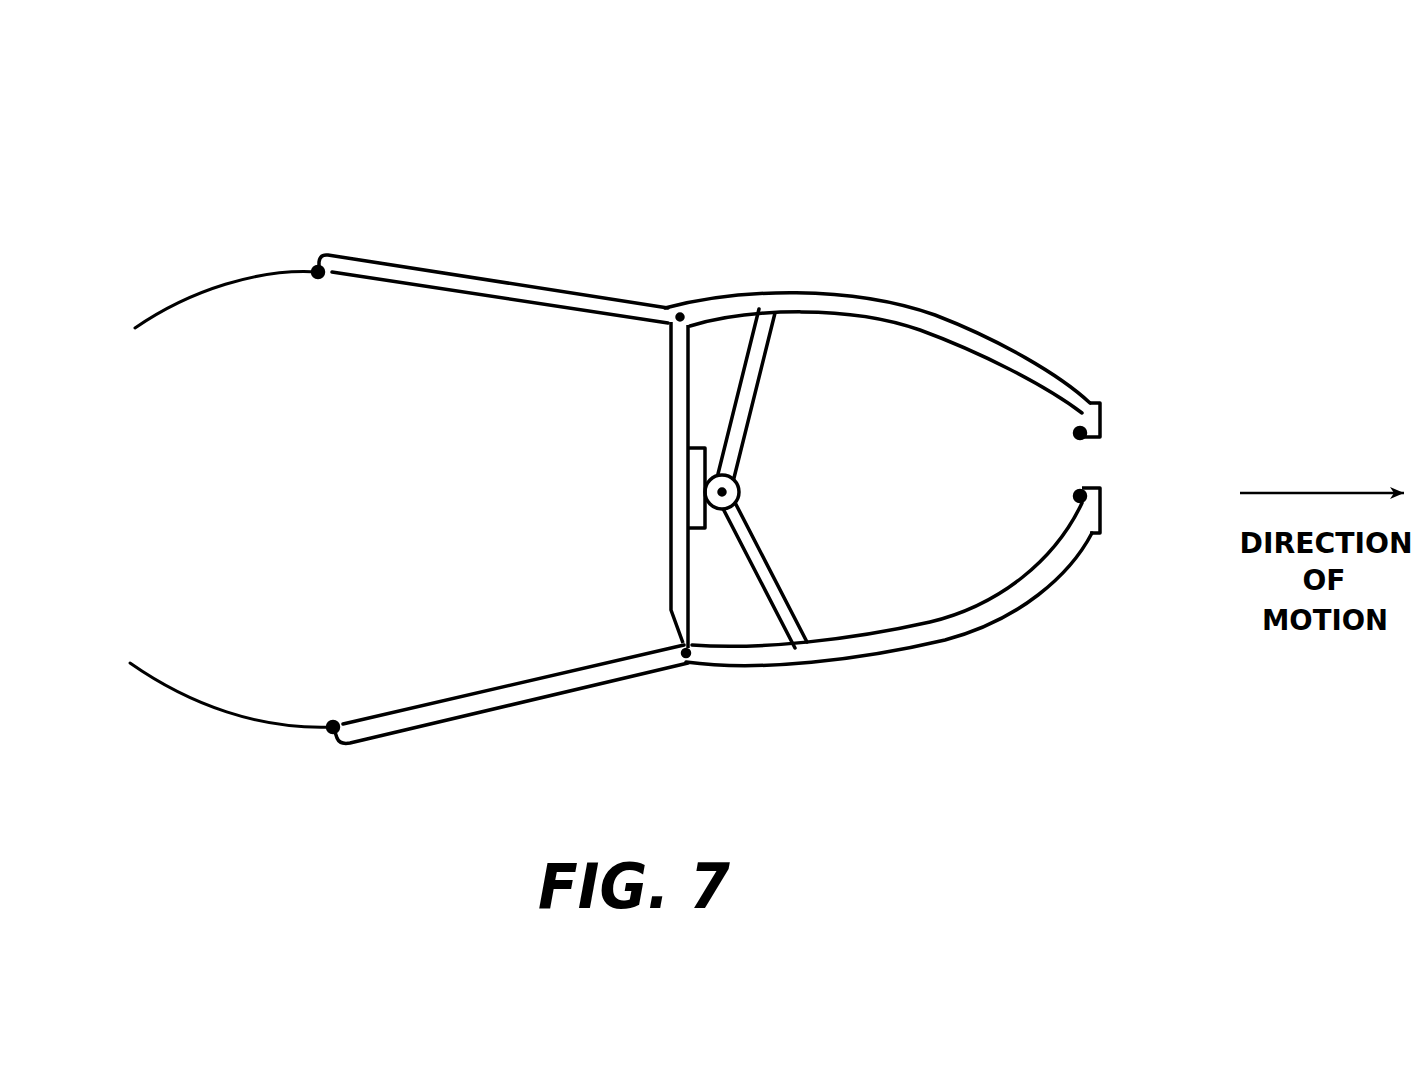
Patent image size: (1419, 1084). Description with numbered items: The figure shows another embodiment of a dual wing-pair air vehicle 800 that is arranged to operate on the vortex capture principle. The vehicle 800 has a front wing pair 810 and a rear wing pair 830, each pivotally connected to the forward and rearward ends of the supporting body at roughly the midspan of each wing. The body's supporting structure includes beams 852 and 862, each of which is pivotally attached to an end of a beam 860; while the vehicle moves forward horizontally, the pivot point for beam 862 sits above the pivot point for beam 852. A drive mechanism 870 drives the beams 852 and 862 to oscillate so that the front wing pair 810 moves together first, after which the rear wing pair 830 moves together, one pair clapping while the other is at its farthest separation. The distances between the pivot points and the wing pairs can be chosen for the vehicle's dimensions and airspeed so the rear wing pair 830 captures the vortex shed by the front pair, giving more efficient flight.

The vehicle 800 is at (878, 371).
The front wing pair 810 is at (1080, 432).
The rear wing pair 830 is at (227, 412).
The beam 852 is at (550, 683).
The beam 860 is at (671, 528).
The beam 862 is at (602, 233).
The drive mechanism 870 is at (813, 483).